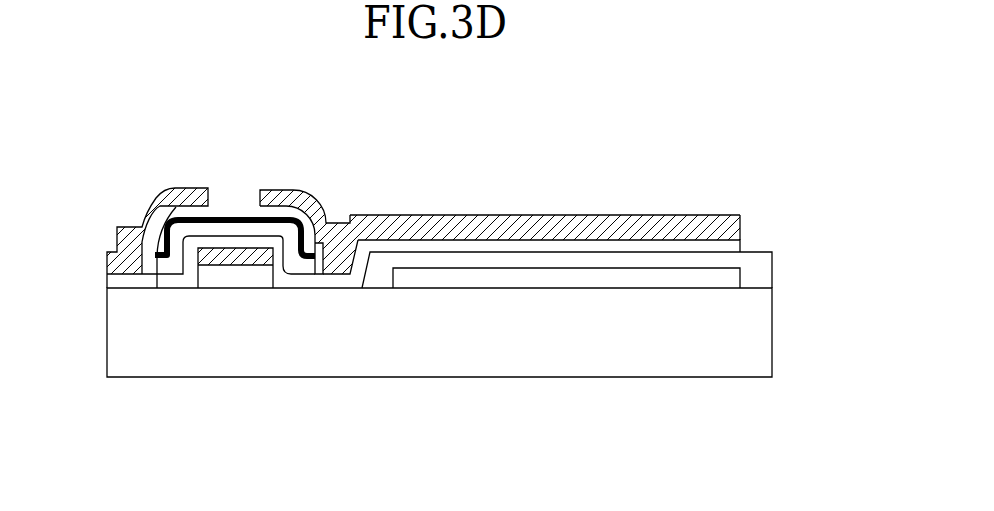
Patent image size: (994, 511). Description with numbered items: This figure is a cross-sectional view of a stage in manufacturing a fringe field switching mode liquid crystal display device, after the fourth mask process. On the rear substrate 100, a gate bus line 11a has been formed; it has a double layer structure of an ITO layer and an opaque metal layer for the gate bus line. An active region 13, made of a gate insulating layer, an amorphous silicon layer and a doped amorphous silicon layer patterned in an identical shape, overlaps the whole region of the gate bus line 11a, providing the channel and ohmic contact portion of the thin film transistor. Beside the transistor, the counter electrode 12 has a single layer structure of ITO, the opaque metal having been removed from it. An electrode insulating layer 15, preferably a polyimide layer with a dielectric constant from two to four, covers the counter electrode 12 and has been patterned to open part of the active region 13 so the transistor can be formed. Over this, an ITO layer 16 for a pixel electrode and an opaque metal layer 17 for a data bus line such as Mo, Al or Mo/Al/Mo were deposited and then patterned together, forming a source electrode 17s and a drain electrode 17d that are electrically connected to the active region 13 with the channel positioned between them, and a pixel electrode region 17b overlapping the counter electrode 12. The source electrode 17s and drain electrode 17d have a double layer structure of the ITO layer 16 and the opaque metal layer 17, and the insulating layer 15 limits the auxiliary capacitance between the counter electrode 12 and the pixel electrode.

The rear substrate 100 is at (760, 332).
The gate bus line 11a is at (202, 238).
The counter electrode 12 is at (483, 262).
The active region 13 is at (240, 227).
The electrode insulating layer 15 is at (760, 272).
The ITO layer for a pixel electrode 16 is at (628, 238).
The opaque metal layer for a data bus line 17 is at (683, 250).
The source electrode 17s is at (143, 226).
The drain electrode 17d is at (312, 204).
The pixel electrode region 17b is at (704, 150).